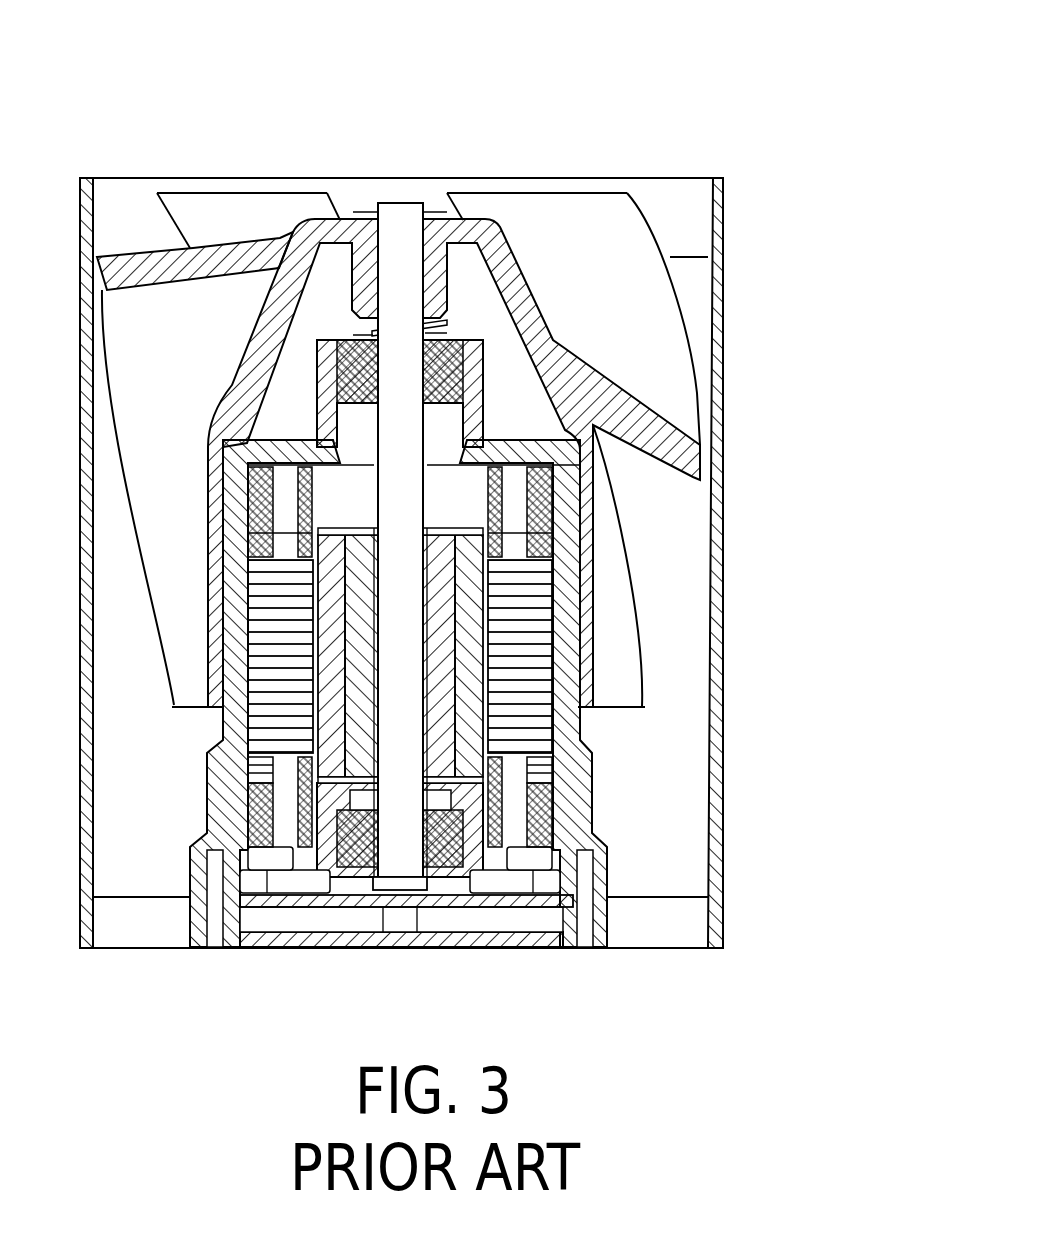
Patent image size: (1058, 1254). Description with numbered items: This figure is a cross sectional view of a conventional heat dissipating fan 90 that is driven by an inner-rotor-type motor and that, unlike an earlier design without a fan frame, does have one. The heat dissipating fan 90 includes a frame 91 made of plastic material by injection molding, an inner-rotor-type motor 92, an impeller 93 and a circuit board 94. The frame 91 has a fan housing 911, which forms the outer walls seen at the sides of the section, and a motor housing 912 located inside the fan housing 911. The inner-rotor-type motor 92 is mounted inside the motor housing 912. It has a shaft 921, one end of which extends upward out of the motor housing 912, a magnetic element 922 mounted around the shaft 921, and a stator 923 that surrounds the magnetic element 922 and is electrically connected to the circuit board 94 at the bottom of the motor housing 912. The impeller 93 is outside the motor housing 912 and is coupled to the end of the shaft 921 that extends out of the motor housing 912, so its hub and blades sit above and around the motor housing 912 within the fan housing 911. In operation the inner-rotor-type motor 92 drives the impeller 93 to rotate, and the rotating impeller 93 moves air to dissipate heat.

The heat dissipating fan 90 is at (491, 519).
The frame 91 is at (491, 563).
The fan housing 911 is at (723, 733).
The motor housing 912 is at (580, 802).
The inner-rotor-type motor 92 is at (538, 546).
The shaft 921 is at (405, 453).
The magnetic element 922 is at (473, 650).
The stator 923 is at (518, 612).
The impeller 93 is at (548, 217).
The circuit board 94 is at (507, 908).